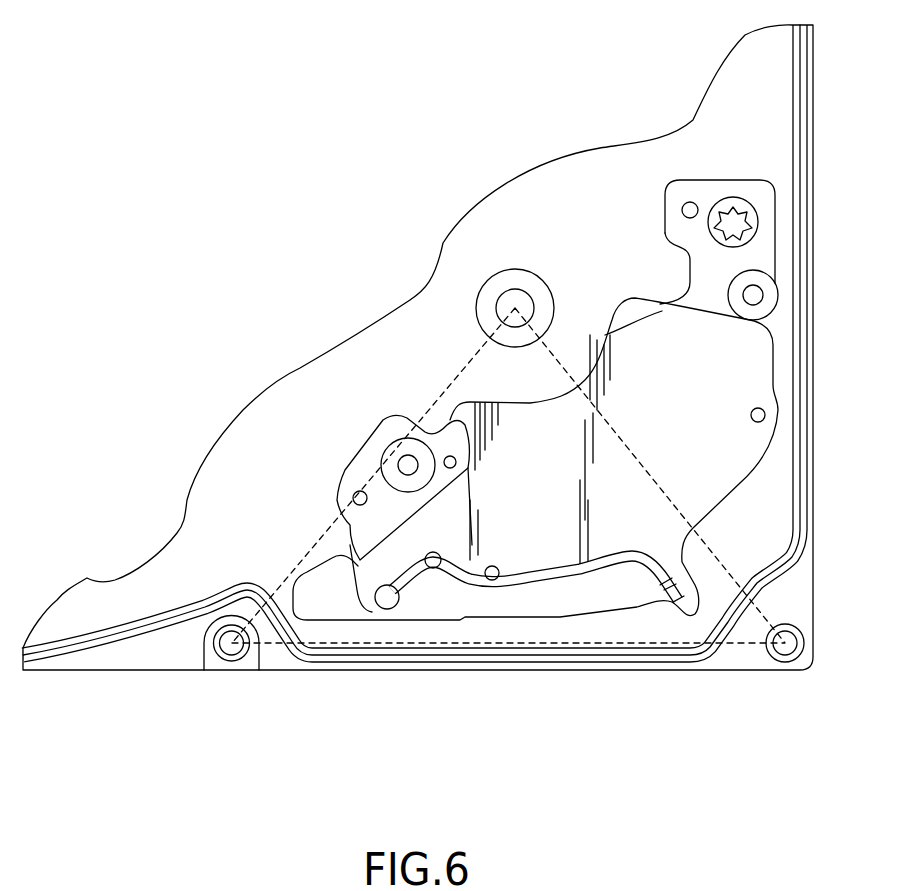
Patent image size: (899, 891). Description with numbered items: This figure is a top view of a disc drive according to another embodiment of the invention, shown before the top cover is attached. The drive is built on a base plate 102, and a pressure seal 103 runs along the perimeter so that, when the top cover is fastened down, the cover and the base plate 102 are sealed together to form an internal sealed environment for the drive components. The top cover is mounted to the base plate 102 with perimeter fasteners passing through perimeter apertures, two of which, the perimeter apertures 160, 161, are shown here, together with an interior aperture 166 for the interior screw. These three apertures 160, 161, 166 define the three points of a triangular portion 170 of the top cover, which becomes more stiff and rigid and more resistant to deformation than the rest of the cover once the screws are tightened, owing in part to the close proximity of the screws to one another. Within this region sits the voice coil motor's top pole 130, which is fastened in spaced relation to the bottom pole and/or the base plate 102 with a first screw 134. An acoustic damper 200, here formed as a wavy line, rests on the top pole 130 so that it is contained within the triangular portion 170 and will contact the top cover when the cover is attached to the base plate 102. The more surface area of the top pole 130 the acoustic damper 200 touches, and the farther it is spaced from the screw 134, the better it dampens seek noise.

The base plate 102 is at (790, 598).
The pressure seal 103 is at (468, 660).
The top pole 130 is at (743, 457).
The first screw 134 is at (731, 222).
The perimeter aperture 160 is at (792, 650).
The perimeter aperture 161 is at (235, 648).
The interior aperture 166 is at (522, 300).
The triangular portion 170 is at (640, 462).
The acoustic damper 200 is at (538, 580).